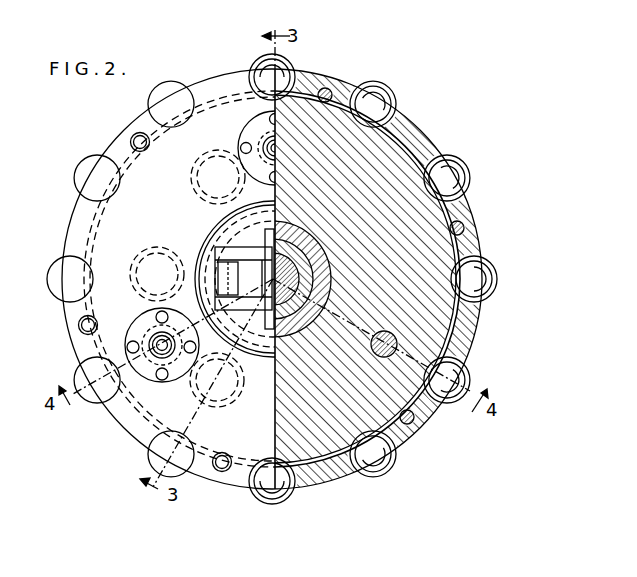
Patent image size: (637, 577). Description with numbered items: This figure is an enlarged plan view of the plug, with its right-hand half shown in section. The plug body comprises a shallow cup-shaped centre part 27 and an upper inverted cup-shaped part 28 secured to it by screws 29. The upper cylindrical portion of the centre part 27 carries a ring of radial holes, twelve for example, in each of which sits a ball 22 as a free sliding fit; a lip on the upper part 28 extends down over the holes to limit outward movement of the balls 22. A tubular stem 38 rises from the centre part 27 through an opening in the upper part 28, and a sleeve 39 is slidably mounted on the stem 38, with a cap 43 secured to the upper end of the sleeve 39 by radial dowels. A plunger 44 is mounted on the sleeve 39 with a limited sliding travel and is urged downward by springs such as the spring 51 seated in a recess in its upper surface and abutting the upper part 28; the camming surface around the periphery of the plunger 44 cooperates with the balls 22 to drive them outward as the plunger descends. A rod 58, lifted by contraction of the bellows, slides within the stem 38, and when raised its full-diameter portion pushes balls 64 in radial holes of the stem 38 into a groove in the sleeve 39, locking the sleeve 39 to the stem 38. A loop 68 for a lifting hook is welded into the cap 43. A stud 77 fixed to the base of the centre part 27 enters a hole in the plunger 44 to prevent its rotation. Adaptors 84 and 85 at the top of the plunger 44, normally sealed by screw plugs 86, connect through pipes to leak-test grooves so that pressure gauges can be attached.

The ball 22 is at (54, 266).
The centre part 27 is at (465, 327).
The upper inverted cup-shaped part 28 is at (222, 79).
The screws 29 is at (130, 140).
The tubular stem 38 is at (302, 316).
The sleeve 39 is at (325, 285).
The cap 43 is at (228, 228).
The plunger 44 is at (355, 177).
The spring 51 is at (190, 180).
The rod 58 is at (322, 253).
The balls 64 is at (220, 250).
The loop 68 is at (267, 331).
The stud 77 is at (390, 357).
The adaptor 84 is at (240, 149).
The adaptor 85 is at (167, 355).
The screw plugs 86 is at (266, 146).